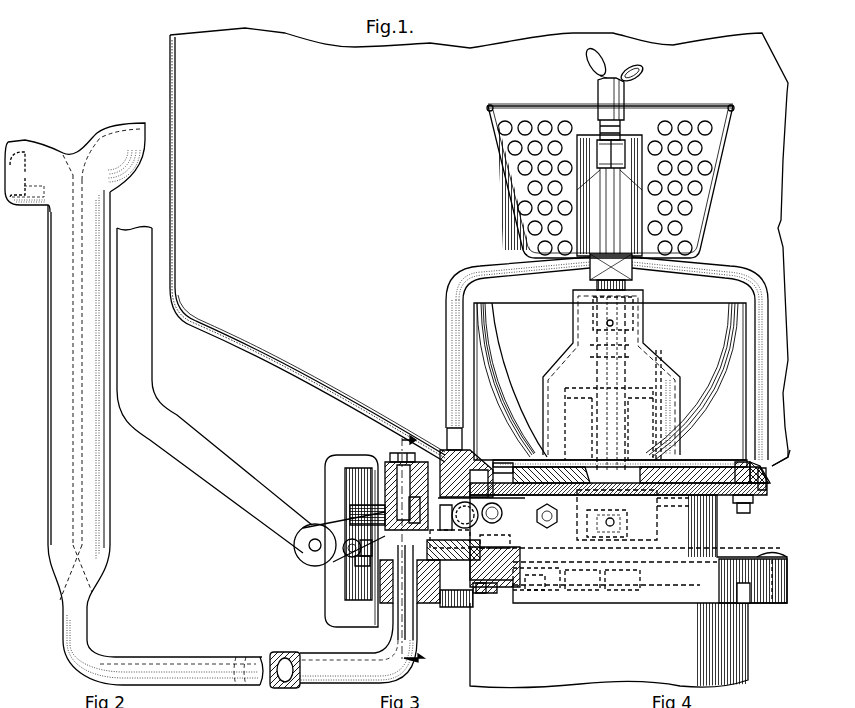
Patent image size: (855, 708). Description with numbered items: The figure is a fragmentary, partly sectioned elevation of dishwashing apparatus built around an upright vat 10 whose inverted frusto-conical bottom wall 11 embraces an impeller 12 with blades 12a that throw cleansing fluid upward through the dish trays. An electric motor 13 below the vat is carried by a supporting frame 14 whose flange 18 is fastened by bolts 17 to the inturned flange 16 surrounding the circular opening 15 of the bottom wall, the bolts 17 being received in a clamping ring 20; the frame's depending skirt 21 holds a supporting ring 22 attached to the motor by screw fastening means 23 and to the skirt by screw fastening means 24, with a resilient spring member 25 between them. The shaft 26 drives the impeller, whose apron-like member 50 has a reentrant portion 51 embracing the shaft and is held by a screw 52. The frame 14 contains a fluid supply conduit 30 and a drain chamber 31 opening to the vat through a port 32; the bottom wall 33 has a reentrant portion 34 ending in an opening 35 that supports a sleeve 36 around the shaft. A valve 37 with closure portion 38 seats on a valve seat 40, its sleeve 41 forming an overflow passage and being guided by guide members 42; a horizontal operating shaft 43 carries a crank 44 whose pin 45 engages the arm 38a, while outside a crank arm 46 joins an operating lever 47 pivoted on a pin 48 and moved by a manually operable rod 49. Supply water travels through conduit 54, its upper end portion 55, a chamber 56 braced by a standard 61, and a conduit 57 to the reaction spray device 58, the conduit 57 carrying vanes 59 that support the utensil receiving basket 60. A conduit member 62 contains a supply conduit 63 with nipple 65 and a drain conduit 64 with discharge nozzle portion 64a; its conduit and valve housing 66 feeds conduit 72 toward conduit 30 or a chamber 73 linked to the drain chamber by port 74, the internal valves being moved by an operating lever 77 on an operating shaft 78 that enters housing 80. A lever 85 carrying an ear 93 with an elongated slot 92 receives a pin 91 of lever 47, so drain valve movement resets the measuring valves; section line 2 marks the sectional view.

The section line 2— 2 is at (407, 546).
The vat 10 is at (176, 187).
The bottom wall 11 is at (274, 366).
The impeller 12 is at (610, 374).
The blades 12a is at (494, 398).
The electric motor 13 is at (556, 675).
The supporting frame 14 is at (702, 550).
The circular opening 15 is at (505, 514).
The inturned flange 16 is at (762, 490).
The bolts 17 is at (744, 513).
The flange 18 is at (754, 502).
The clamping ring 20 is at (736, 474).
The depending skirt 21 is at (738, 572).
The supporting ring 22 is at (478, 594).
The screw fastening means 23 is at (488, 585).
The screw fastening means 24 is at (772, 556).
The resilient spring member 25 is at (462, 607).
The shaft 26 is at (598, 360).
The fluid supply conduit 30 is at (503, 566).
The drain chamber 31 is at (562, 556).
The port 32 is at (694, 491).
The bottom wall 33 is at (546, 562).
The reentrant portion 34 is at (588, 556).
The opening 35 is at (628, 506).
The sleeve 36 is at (597, 453).
The valve 37 is at (686, 471).
The closure portion 38 is at (530, 466).
The arm 38a is at (650, 526).
The valve seat 40 is at (503, 466).
The sleeve 41 is at (658, 420).
The guide members 42 is at (586, 398).
The operating shaft 43 is at (544, 527).
The operating crank 44 is at (612, 560).
The pin 45 is at (614, 526).
The crank arm 46 is at (526, 526).
The operating lever 47 is at (316, 562).
The pin 48 is at (458, 508).
The manually operable rod 49 is at (148, 368).
The apron-like member 50 is at (560, 368).
The reentrant portion 51 is at (634, 326).
The screw 52 is at (630, 287).
The vertical conduit 54 is at (447, 382).
The upper end portion 55 is at (490, 286).
The chamber 56 is at (600, 262).
The vertical conduit 57 is at (624, 165).
The spray device 58 is at (625, 93).
The vanes 59 is at (568, 212).
The utensil receiving basket 60 is at (510, 150).
The standard 61 is at (736, 282).
The conduit member 62 is at (97, 645).
The fluid supply conduit 63 is at (50, 471).
The drain conduit 64 is at (106, 478).
The discharge nozzle portion 64a is at (116, 127).
The nipple 65 is at (22, 165).
The conduit and valve housing 66 is at (382, 614).
The conduit 72 is at (418, 600).
The chamber 73 is at (380, 584).
The port 74 is at (440, 556).
The operating lever 77 is at (418, 500).
The operating shaft 78 is at (392, 486).
The housing 80 is at (358, 462).
The lever 85 is at (350, 513).
The pin 91 is at (366, 556).
The elongated slot 92 is at (350, 557).
The ear 93 is at (357, 566).